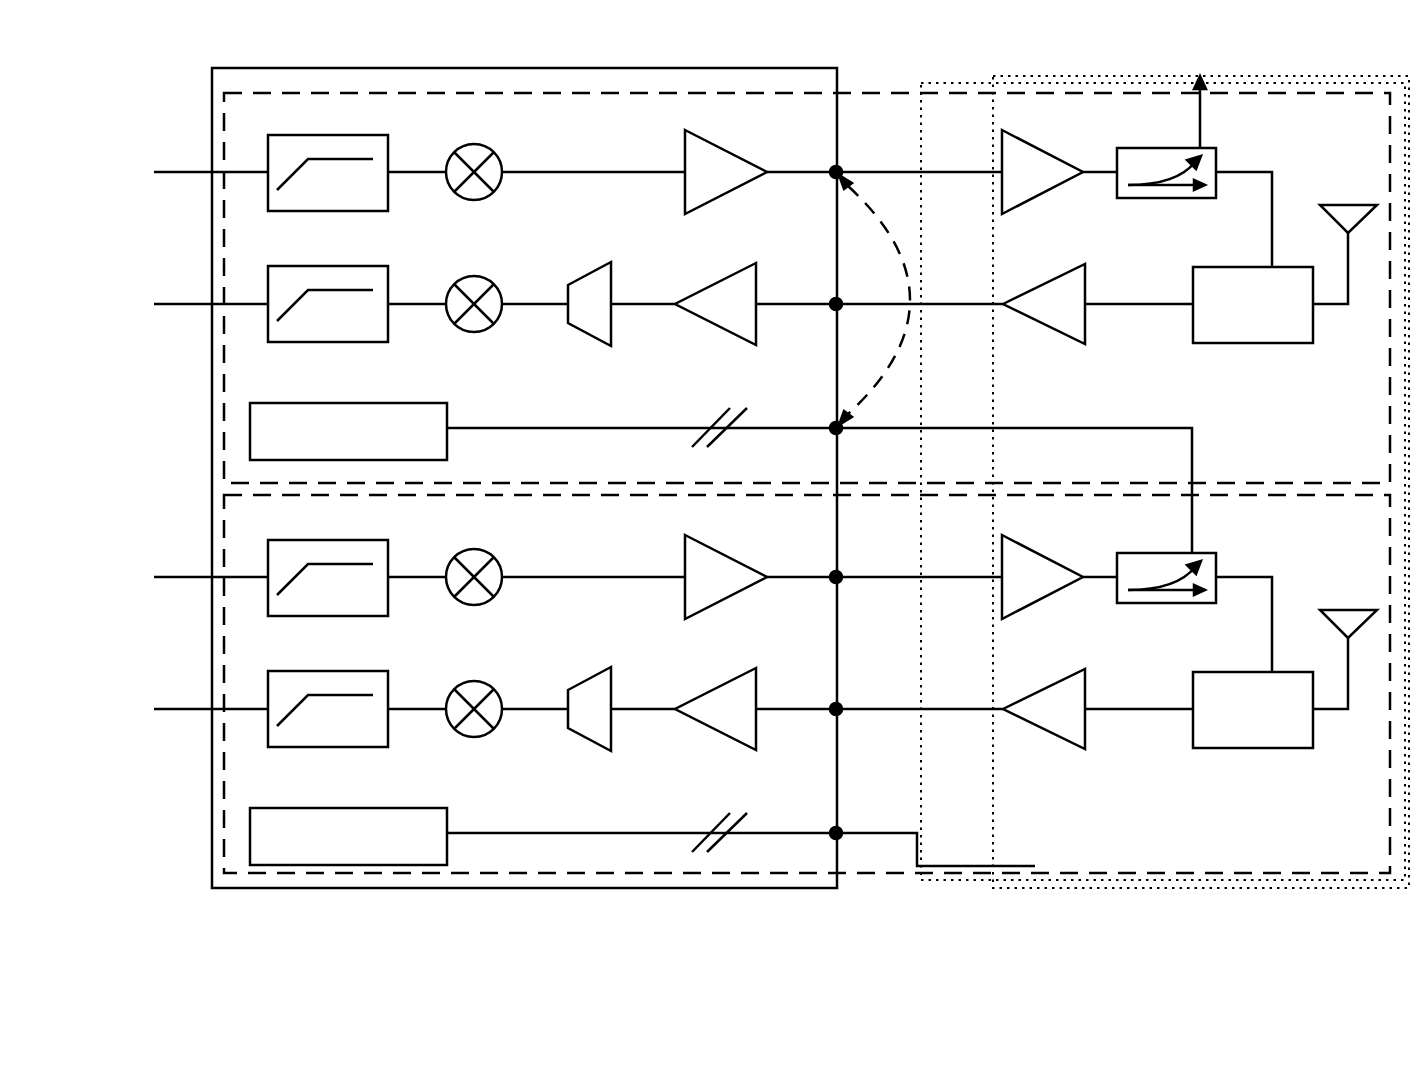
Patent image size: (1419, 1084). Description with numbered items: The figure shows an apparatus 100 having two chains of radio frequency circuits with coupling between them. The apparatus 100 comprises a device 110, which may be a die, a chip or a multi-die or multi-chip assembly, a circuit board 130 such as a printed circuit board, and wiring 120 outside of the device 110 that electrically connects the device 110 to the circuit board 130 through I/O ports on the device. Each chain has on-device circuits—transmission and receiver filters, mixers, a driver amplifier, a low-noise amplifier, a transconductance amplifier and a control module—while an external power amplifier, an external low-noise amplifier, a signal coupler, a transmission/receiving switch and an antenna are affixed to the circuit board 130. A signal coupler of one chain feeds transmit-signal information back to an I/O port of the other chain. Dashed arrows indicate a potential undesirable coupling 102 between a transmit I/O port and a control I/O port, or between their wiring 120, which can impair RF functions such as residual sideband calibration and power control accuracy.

The apparatus 100 is at (143, 931).
The coupling 102 is at (874, 300).
The device 110 is at (524, 463).
The wiring 120 is at (940, 83).
The circuit board 130 is at (1045, 891).